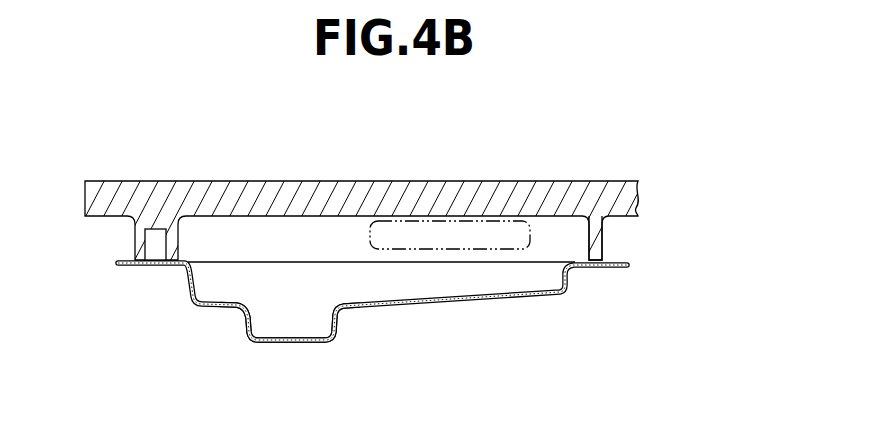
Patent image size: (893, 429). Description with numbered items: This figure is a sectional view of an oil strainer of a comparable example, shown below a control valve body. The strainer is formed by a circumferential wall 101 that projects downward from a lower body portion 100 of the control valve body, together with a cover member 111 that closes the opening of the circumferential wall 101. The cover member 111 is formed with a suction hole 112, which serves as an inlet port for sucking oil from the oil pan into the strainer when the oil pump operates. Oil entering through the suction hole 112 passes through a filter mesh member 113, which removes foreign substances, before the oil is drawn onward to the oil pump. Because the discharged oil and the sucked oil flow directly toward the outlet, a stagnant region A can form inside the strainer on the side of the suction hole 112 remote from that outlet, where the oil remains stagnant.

The lower body portion 100 is at (612, 190).
The circumferential wall 101 is at (598, 238).
The stagnant region A is at (455, 235).
The cover member 111 is at (572, 281).
The suction hole 112 is at (267, 341).
The filter mesh member 113 is at (498, 265).